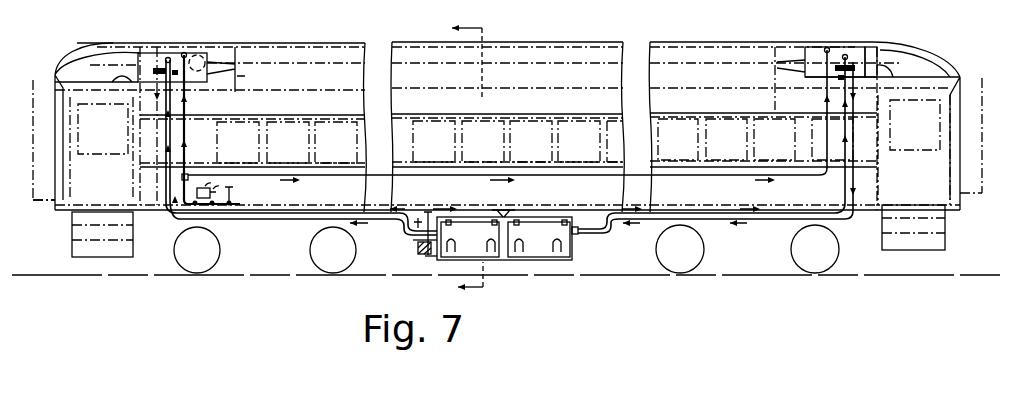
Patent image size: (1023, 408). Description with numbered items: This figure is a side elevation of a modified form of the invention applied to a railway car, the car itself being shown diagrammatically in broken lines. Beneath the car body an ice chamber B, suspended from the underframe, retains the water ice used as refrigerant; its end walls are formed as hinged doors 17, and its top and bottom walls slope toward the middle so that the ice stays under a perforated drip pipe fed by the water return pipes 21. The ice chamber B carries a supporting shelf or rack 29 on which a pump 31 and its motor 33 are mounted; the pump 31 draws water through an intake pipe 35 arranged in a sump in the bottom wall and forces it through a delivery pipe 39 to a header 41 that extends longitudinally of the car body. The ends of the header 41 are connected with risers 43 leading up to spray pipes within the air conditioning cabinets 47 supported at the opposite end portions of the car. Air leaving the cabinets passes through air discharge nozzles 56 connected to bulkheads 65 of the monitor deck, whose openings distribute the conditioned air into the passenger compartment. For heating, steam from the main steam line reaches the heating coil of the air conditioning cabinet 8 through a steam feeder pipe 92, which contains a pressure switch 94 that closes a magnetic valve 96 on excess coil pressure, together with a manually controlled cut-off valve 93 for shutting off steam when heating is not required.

The air conditioning cabinet 8 is at (457, 159).
The hinged doors 17 is at (547, 243).
The water return pipes 21 is at (160, 108).
The supporting shelf or rack 29 is at (427, 262).
The pump 31 is at (424, 256).
The motor 33 is at (420, 254).
The intake pipe 35 is at (435, 256).
The delivery pipe 39 is at (416, 232).
The header 41 is at (411, 215).
The risers 43 is at (165, 184).
The air conditioning cabinets 47 is at (158, 53).
The air discharge nozzles 56 is at (234, 62).
The bulkheads 65 is at (238, 79).
The steam feeder pipe 92 is at (189, 106).
The manually controlled cut-off valve 93 is at (230, 205).
The pressure switch 94 is at (196, 205).
The magnetic valve 96 is at (214, 205).
The ice chamber B is at (563, 232).